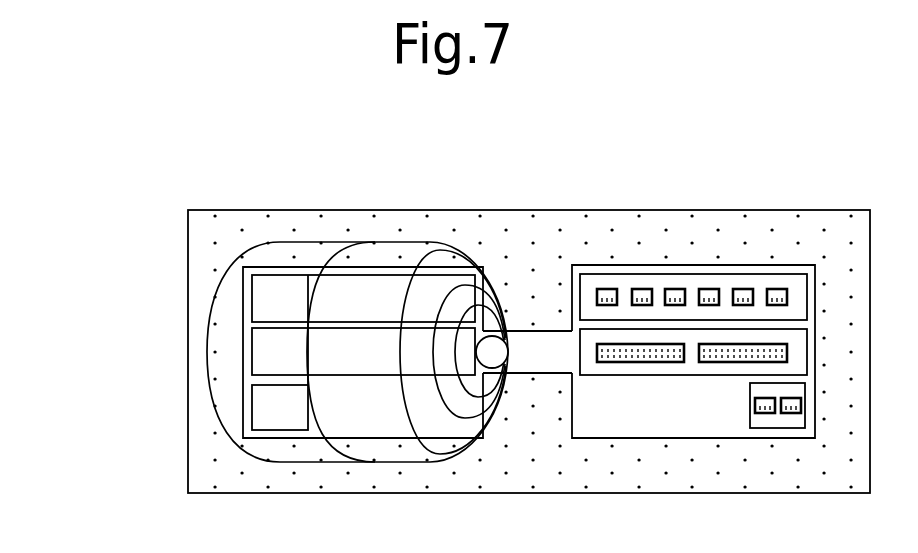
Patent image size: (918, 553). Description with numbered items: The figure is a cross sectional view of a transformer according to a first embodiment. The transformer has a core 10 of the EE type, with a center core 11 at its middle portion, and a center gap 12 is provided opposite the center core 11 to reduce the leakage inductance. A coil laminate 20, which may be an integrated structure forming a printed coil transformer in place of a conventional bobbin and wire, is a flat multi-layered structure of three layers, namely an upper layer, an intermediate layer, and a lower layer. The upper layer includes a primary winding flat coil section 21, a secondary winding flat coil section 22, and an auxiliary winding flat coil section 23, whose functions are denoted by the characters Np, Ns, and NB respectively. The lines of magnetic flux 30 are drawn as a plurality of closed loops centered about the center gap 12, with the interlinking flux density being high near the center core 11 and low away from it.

The core 10 is at (345, 234).
The center core 11 is at (520, 302).
The center gap 12 is at (537, 347).
The coil laminate 20 is at (260, 352).
The primary winding flat coil section 21 is at (250, 291).
The secondary winding flat coil section 22 is at (250, 352).
The auxiliary winding flat coil section 23 is at (262, 415).
The lines of magnetic flux 30 is at (241, 257).